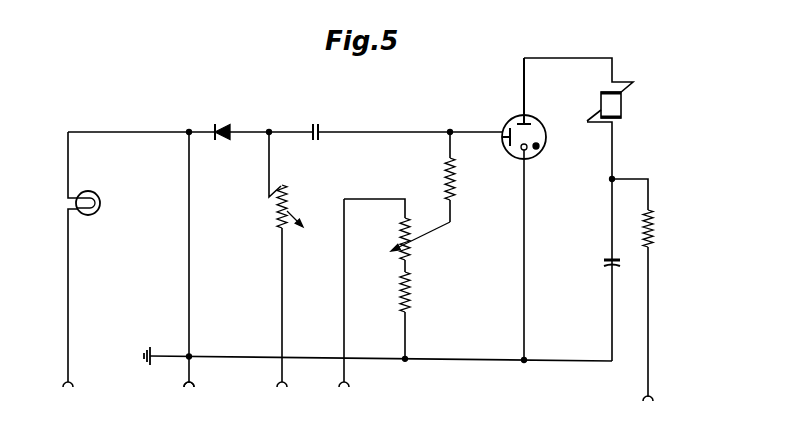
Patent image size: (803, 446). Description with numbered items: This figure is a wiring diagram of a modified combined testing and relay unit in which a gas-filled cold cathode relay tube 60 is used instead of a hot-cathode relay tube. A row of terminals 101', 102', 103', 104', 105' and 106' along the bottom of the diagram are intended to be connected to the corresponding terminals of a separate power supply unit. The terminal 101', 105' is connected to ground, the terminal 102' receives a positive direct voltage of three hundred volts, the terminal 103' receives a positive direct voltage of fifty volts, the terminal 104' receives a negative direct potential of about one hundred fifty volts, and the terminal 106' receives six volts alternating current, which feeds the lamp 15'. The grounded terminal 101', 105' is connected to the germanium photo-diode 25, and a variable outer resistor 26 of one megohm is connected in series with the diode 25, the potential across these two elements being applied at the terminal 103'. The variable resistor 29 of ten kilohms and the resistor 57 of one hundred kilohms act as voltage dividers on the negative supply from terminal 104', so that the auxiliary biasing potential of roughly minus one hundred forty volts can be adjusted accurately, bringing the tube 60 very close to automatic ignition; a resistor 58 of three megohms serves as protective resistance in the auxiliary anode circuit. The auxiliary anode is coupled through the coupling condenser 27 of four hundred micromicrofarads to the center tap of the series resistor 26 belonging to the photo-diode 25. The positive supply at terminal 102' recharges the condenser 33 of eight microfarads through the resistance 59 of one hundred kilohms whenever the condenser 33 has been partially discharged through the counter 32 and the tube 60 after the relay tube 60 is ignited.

The lamp 15' is at (107, 197).
The germanium photo-diode 25 is at (223, 141).
The coupling condenser 27 is at (318, 141).
The variable outer resistor 26 is at (279, 218).
The variable resistor 29 is at (400, 228).
The resistor 57 is at (399, 297).
The protective resistor 58 is at (440, 178).
The relay tube 60 is at (538, 129).
The counter 32 is at (608, 102).
The resistance 59 is at (652, 212).
The condenser 33 is at (606, 264).
The terminal 106' is at (65, 397).
The terminal 101' is at (193, 398).
The terminal 105' is at (189, 384).
The terminal 103' is at (279, 399).
The terminal 104' is at (345, 399).
The terminal 102' is at (652, 409).